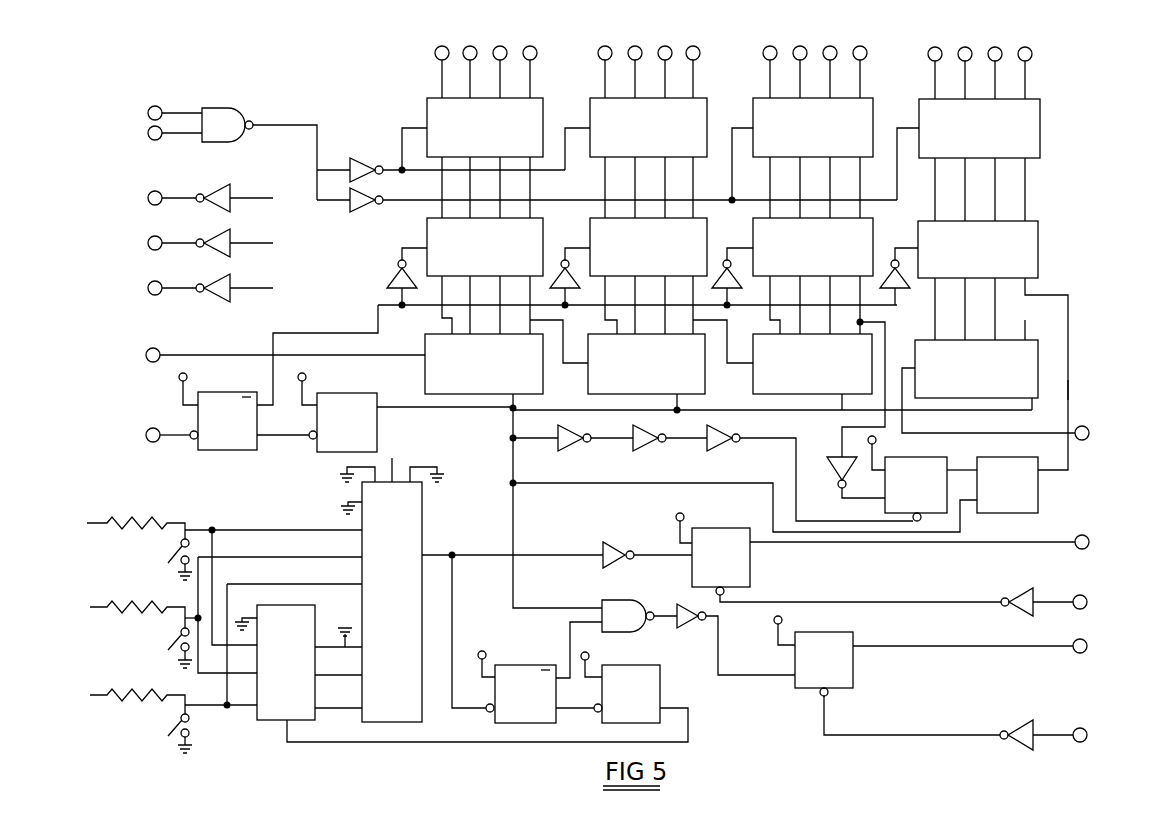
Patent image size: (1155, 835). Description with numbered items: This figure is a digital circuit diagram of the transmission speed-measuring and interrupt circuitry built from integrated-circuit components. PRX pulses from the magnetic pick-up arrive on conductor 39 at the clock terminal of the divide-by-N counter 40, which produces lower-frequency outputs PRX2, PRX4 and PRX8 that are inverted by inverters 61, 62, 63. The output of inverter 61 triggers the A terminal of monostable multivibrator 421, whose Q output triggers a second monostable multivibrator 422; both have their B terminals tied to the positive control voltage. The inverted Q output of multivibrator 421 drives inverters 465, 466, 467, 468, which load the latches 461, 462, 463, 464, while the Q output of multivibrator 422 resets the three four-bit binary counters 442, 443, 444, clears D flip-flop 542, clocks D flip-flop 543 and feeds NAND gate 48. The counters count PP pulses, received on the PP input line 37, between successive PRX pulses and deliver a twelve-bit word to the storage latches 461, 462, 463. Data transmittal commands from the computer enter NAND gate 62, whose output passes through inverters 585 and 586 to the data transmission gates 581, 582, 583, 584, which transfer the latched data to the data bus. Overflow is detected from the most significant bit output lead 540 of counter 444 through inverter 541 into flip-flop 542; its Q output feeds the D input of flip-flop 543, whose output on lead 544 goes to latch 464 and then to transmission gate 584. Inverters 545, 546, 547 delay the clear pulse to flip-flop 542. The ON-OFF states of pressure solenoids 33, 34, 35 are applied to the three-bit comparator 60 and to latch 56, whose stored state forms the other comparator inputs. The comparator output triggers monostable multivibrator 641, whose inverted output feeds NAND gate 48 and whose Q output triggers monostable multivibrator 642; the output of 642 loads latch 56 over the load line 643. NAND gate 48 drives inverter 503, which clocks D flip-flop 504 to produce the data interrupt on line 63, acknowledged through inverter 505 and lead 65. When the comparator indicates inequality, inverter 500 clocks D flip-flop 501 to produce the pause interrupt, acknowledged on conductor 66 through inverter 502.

The NAND gate 62 is at (240, 110).
The inverter 61 is at (230, 187).
The inverter / data interrupt line 63 is at (230, 277).
The inverter 585 is at (365, 160).
The inverter 586 is at (372, 206).
The data transmission gate 581 is at (543, 115).
The data transmission gate 582 is at (707, 107).
The data transmission gate 583 is at (873, 107).
The data transmission gate 584 is at (1040, 128).
The storage latch 461 is at (543, 232).
The storage latch 462 is at (707, 244).
The storage latch 463 is at (873, 244).
The latch 464 is at (1038, 250).
The inverter 465 is at (387, 278).
The inverter 466 is at (582, 288).
The inverter 467 is at (744, 288).
The inverter 468 is at (902, 290).
The PP input line 37 is at (207, 354).
The four-bit binary counter 442 is at (425, 380).
The four-bit binary counter 443 is at (590, 396).
The four-bit binary counter 444 is at (753, 396).
The divide-by-N counter 40 is at (1038, 361).
The lead 544 is at (1068, 388).
The conductor 39 is at (947, 433).
The monostable multivibrator 421 is at (207, 450).
The monostable multivibrator 422 is at (377, 428).
The inverter 545 is at (584, 466).
The inverter 546 is at (659, 466).
The inverter 547 is at (733, 466).
The most significant bit output lead 540 is at (858, 427).
The inverter 541 is at (828, 466).
The D flip-flop 542 is at (897, 458).
The D flip-flop 543 is at (985, 458).
The three-bit comparator 60 is at (422, 527).
The pressure solenoid 33 is at (169, 560).
The pressure solenoid 34 is at (169, 647).
The pressure solenoid 35 is at (169, 733).
The latch 56 is at (318, 617).
The load line 643 is at (460, 742).
The inverter 500 is at (606, 542).
The D flip-flop 501 is at (735, 528).
The conductor 66 is at (815, 602).
The inverter 502 is at (1020, 588).
The NAND gate 48 is at (606, 600).
The inverter 503 is at (688, 604).
The D flip-flop 504 is at (820, 632).
The lead 65 is at (863, 735).
The inverter 505 is at (1012, 720).
The monostable multivibrator 641 is at (510, 665).
The monostable multivibrator 642 is at (635, 665).